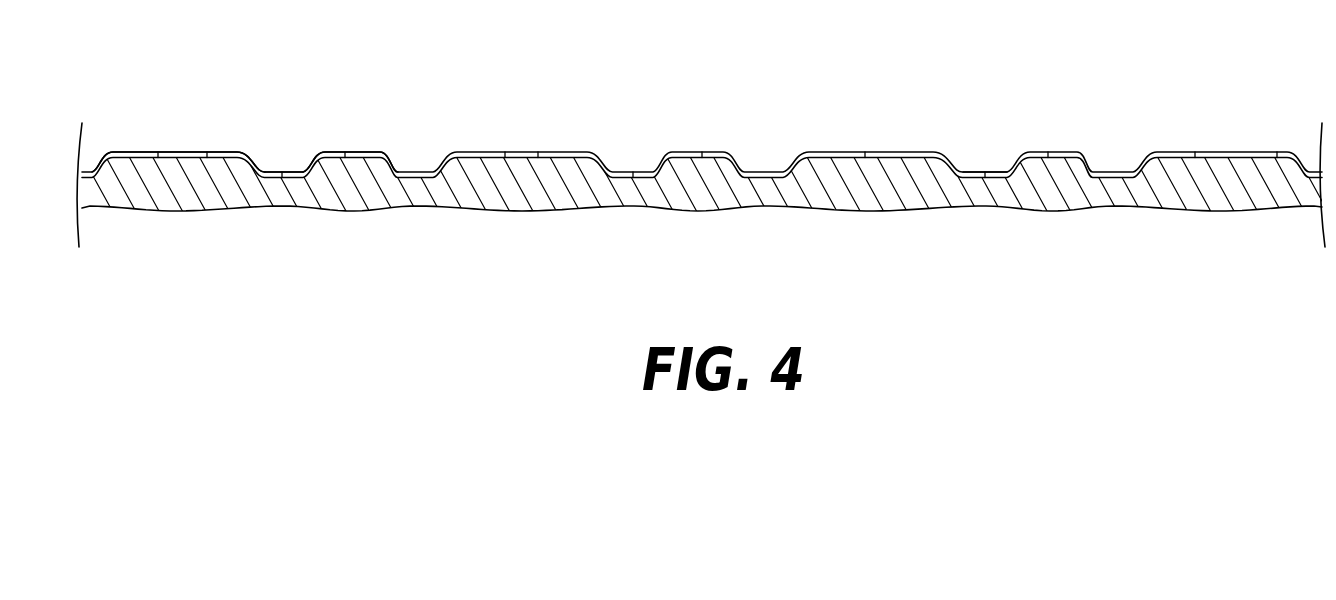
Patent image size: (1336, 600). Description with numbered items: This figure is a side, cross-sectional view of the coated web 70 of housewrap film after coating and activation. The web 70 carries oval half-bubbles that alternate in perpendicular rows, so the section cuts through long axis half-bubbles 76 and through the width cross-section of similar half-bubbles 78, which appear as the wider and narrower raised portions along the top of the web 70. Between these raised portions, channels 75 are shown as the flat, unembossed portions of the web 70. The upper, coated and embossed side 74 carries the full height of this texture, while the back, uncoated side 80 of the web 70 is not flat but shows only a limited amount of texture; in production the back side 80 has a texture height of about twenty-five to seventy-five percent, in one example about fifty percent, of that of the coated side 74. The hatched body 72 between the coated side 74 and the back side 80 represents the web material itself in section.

The coated web 70 is at (767, 113).
The core body 72 is at (537, 190).
The coated side 74 is at (558, 153).
The channels 75 is at (285, 169).
The long axis half-bubbles 76 is at (173, 167).
The half-bubbles 78 is at (345, 168).
The back side 80 is at (216, 213).